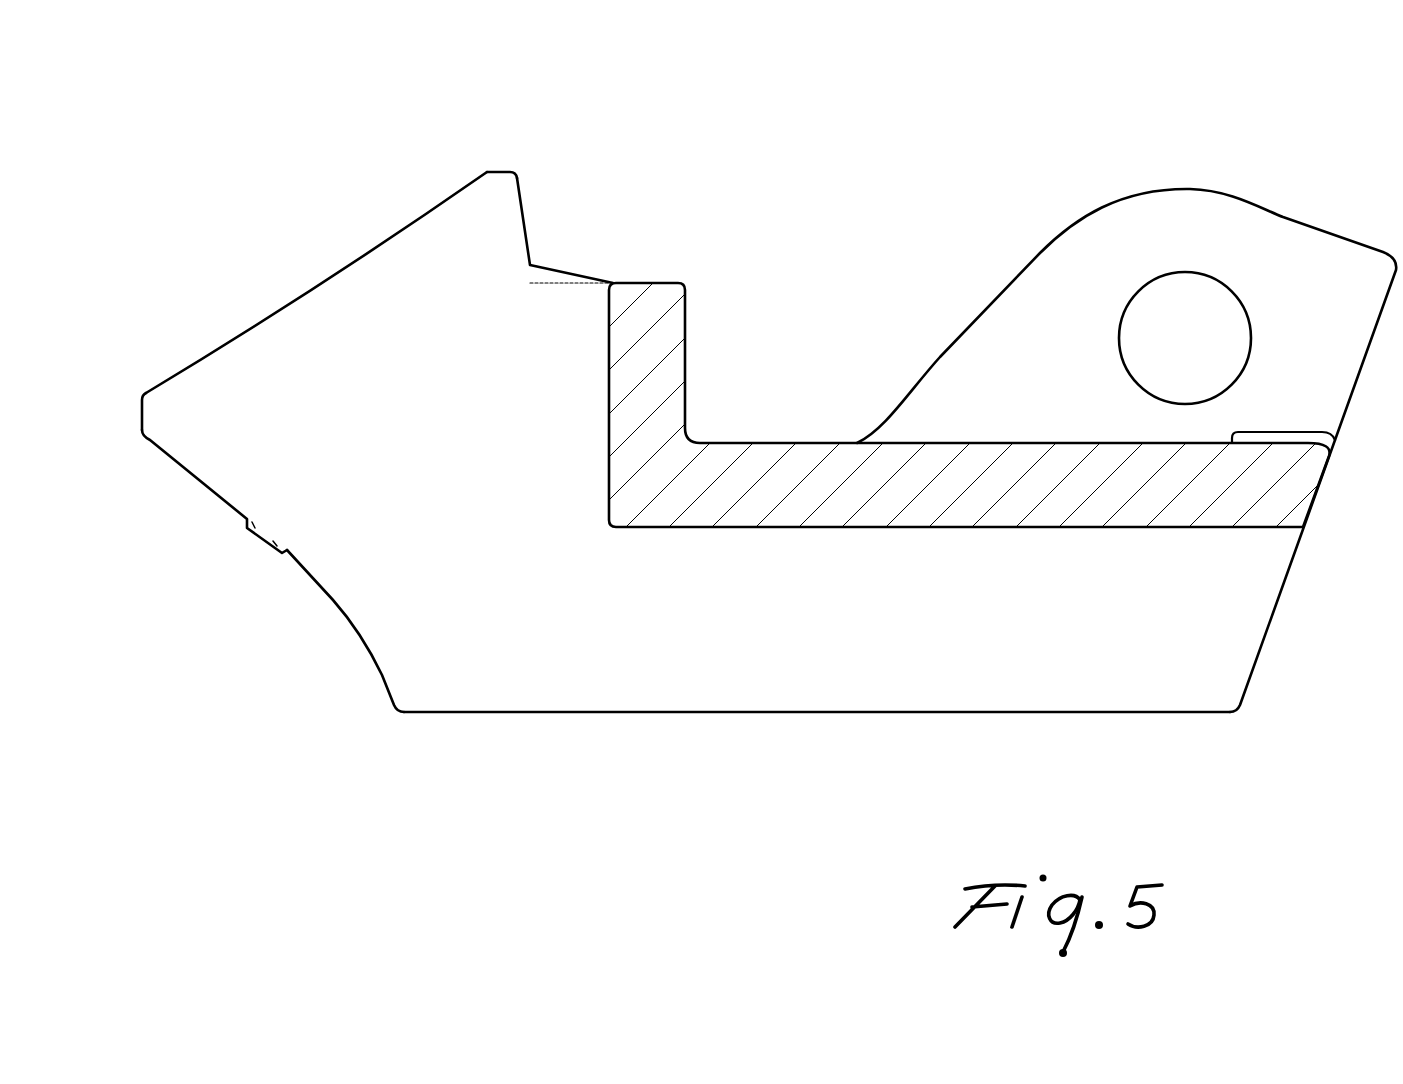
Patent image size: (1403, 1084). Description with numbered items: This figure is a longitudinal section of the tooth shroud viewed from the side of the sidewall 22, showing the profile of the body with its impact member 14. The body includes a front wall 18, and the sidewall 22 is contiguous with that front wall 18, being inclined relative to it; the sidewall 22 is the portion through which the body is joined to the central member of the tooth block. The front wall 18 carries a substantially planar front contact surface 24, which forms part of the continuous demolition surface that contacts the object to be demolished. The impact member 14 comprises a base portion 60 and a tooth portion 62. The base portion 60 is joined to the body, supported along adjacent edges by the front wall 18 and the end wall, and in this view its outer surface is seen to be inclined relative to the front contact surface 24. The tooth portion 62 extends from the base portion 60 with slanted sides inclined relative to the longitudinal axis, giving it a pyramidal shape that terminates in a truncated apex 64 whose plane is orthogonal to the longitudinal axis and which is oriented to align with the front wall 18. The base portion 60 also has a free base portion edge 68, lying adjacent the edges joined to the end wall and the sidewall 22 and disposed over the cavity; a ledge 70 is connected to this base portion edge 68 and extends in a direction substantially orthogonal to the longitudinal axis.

The impact member 14 is at (324, 275).
The front wall 18 is at (728, 736).
The sidewall 22 is at (1227, 645).
The front contact surface 24 is at (492, 713).
The base portion 60 is at (382, 588).
The tooth portion 62 is at (253, 448).
The truncated apex 64 is at (142, 414).
The base portion edge 68 is at (523, 202).
The ledge 70 is at (487, 170).